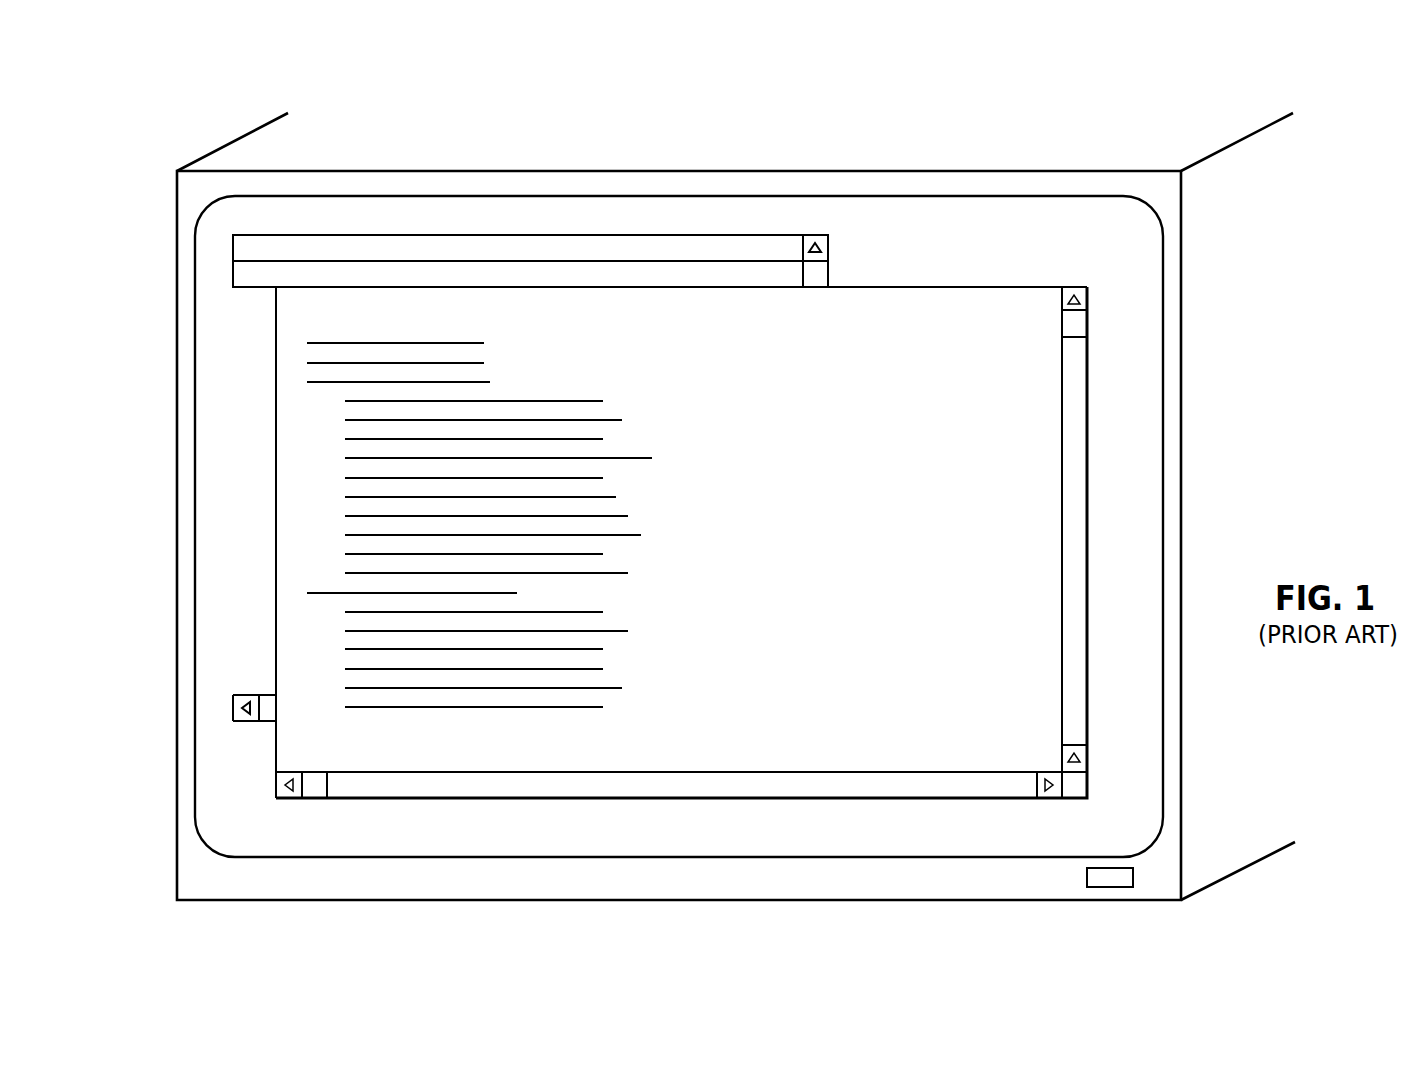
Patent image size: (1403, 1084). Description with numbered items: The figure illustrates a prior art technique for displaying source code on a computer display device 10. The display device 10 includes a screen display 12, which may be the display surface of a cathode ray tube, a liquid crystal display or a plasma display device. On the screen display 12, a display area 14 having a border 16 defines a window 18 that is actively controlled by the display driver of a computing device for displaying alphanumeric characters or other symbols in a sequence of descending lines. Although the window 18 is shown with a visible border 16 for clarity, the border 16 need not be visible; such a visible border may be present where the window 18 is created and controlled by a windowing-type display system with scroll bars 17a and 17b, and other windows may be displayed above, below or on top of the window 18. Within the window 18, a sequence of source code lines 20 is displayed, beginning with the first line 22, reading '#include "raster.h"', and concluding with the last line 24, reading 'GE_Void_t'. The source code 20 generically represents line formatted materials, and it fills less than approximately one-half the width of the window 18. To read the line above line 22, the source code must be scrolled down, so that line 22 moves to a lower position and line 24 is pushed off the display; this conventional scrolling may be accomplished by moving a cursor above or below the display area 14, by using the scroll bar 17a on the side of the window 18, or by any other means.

The computer display device 10 is at (1182, 316).
The screen display 12 is at (1147, 371).
The display area 14 is at (936, 300).
The border 16 is at (994, 286).
The scroll bar 17a is at (1075, 502).
The scroll bar 17b is at (735, 787).
The window 18 is at (1091, 279).
The source code lines 20 is at (572, 368).
The first line 22 is at (506, 320).
The last line 24 is at (436, 740).